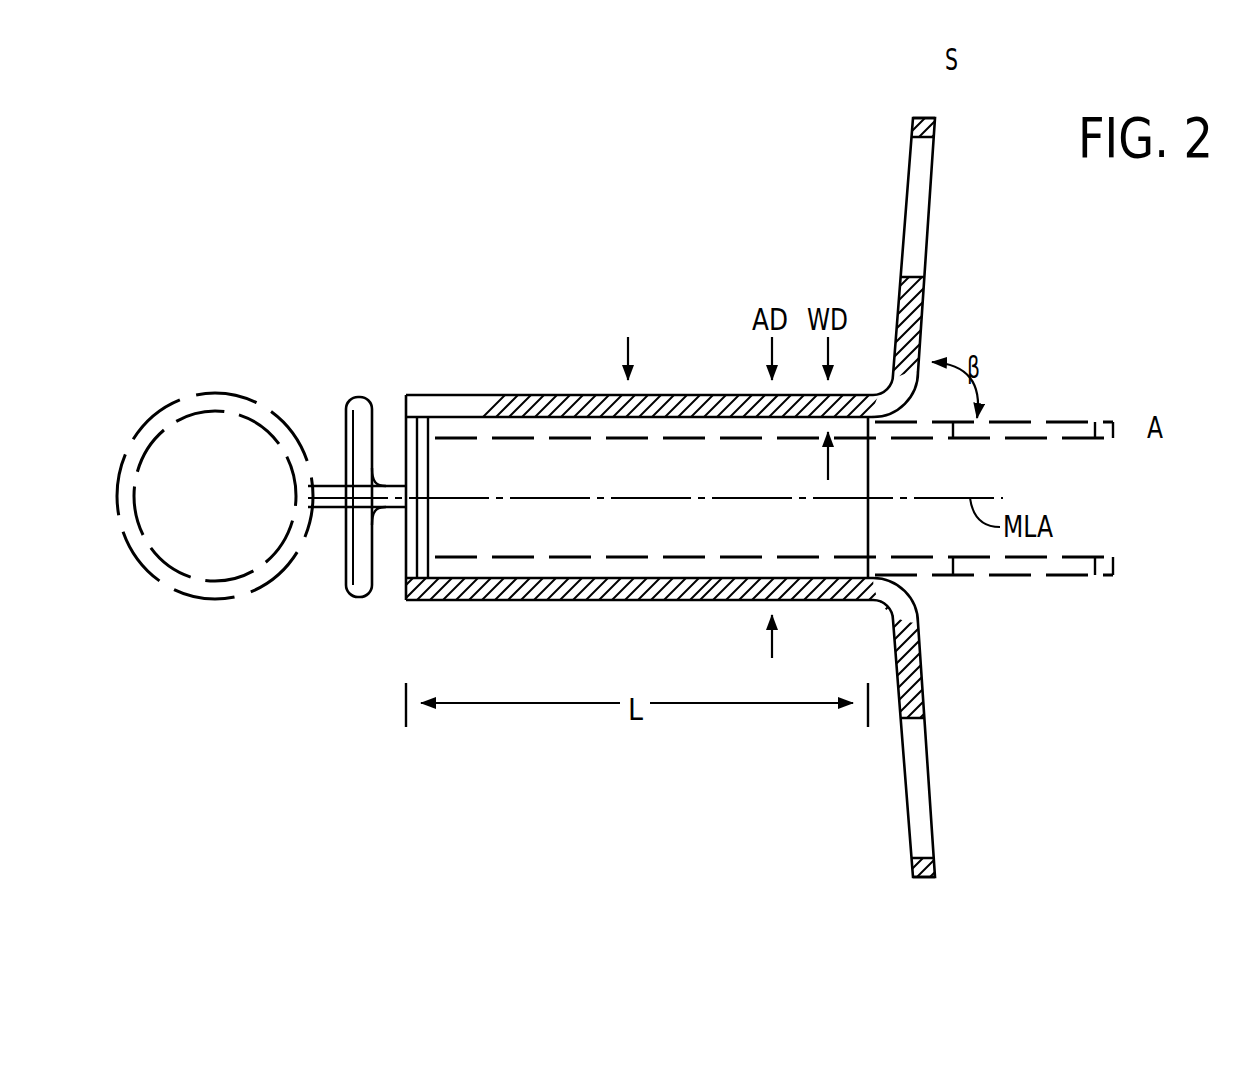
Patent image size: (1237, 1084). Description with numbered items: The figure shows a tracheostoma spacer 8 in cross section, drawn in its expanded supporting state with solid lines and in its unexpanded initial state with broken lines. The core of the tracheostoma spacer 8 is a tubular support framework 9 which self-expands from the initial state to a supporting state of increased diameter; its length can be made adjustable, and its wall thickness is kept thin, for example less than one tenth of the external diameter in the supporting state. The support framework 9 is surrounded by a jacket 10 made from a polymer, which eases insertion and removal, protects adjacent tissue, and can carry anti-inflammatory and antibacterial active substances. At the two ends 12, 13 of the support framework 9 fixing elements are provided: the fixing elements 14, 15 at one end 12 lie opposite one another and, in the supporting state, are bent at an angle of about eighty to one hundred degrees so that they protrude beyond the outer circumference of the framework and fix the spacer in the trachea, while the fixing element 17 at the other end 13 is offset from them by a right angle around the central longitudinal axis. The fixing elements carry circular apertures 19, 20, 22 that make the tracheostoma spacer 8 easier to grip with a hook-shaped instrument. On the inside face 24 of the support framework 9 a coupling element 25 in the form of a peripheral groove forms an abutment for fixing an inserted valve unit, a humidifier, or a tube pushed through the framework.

The tracheostoma spacer 8 is at (462, 212).
The tubular support framework 9 is at (627, 341).
The jacket 10 is at (467, 395).
The end of the support framework 12 is at (886, 467).
The end of the support framework 13 is at (398, 402).
The fixing element 14 is at (910, 125).
The fixing element 15 is at (912, 870).
The fixing element 17 is at (360, 397).
The circular aperture 19 is at (917, 220).
The circular aperture 20 is at (918, 777).
The circular aperture 22 is at (340, 547).
The inside face of the support framework 24 is at (575, 432).
The coupling element 25 is at (432, 467).